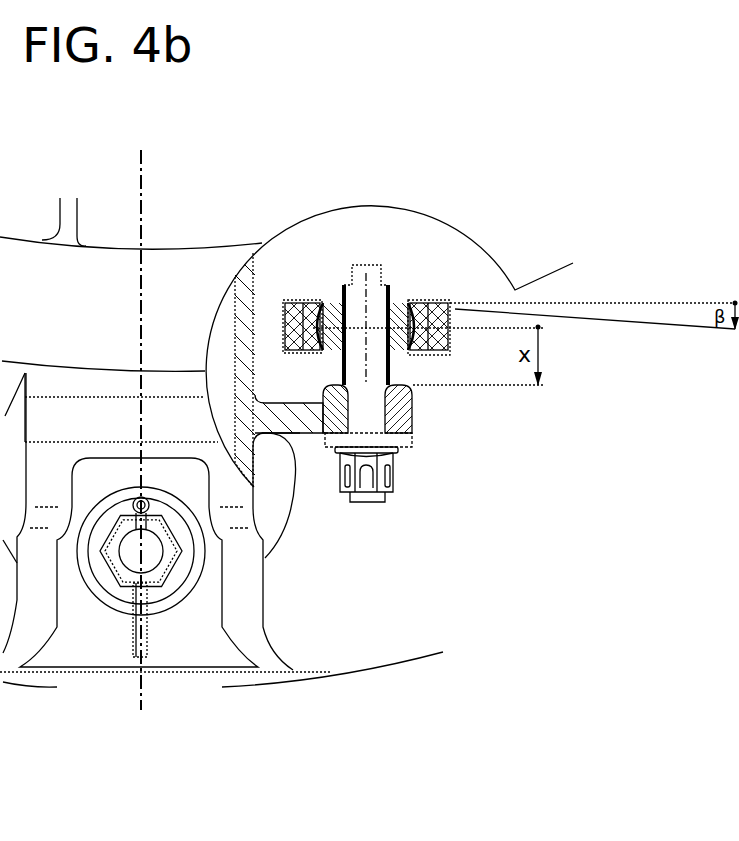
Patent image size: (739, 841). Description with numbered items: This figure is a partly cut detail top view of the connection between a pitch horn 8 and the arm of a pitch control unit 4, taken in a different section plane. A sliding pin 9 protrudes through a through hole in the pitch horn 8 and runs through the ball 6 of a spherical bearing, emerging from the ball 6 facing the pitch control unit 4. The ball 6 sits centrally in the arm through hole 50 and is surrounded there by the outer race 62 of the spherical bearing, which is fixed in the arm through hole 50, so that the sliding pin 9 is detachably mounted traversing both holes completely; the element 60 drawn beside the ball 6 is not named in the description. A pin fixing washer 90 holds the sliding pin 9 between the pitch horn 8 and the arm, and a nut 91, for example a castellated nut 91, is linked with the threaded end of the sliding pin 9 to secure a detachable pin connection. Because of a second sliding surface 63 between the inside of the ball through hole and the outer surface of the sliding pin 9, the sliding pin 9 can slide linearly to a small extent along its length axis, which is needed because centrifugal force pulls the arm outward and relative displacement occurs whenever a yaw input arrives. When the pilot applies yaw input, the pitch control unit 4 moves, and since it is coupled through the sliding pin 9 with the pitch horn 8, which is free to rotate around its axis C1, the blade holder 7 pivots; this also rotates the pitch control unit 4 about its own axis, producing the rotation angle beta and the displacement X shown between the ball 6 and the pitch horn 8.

The pitch control unit 4 is at (204, 309).
The spherical bearing / ball 6 is at (403, 305).
The blade holder 7 is at (122, 470).
The pitch horn 8 is at (280, 422).
The sliding pin 9 is at (372, 305).
The arm through hole 50 is at (297, 318).
The rolling element (ball) 60 is at (317, 308).
The outer race 62 is at (322, 312).
The second sliding surface 63 is at (343, 360).
The pin fixing washer 90 is at (399, 388).
The nut 91 is at (363, 458).
The axis of the pitch horn C1 is at (150, 563).